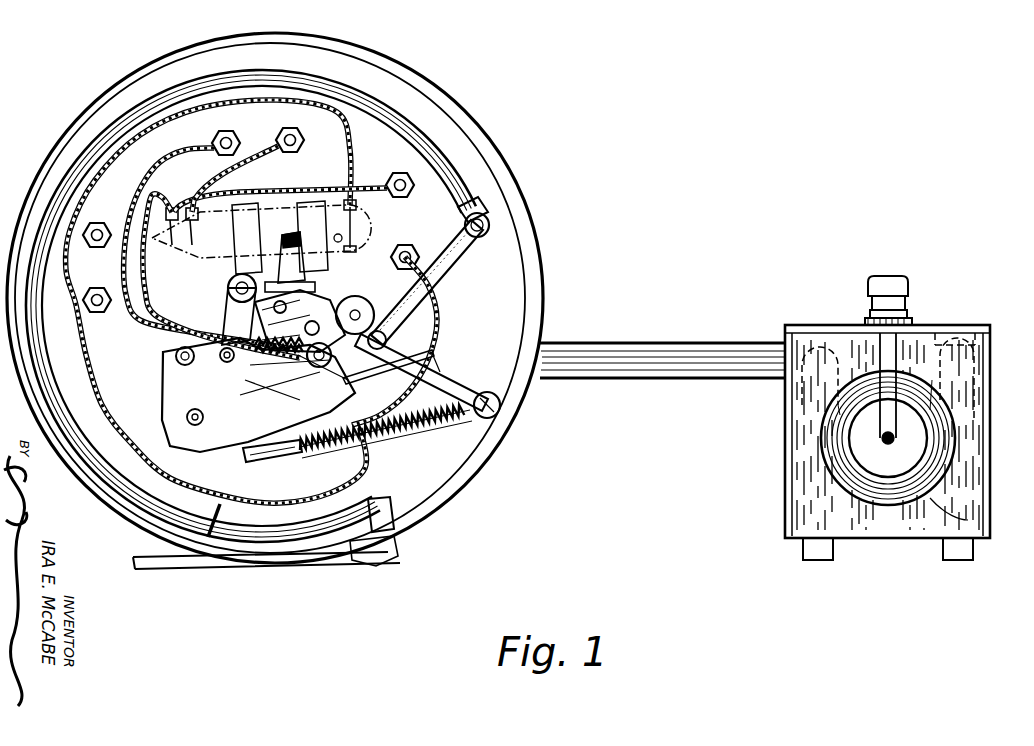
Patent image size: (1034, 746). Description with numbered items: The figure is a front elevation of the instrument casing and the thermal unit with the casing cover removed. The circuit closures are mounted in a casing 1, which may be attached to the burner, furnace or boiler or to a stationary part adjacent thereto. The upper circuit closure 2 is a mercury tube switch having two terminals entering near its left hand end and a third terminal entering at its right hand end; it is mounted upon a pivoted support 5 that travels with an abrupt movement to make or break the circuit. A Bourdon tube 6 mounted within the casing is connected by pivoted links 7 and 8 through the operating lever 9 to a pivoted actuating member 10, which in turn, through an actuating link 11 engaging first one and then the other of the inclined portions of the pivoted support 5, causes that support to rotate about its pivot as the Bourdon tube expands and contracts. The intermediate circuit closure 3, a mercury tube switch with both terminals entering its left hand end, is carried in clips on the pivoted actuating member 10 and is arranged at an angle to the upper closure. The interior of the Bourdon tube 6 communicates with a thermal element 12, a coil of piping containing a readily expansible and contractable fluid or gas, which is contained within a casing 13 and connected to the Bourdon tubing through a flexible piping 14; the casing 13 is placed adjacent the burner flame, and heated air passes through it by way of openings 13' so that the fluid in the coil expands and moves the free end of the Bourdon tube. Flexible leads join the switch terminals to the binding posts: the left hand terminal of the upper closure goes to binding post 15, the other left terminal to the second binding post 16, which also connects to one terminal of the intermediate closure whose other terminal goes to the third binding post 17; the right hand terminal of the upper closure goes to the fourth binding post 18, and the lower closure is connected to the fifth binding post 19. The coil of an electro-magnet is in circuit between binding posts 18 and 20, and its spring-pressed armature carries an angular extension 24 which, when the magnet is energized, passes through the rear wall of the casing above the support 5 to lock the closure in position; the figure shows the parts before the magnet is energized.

The casing 1 is at (26, 212).
The upper circuit closure 2 is at (376, 226).
The intermediate circuit closure 3 is at (418, 364).
The pivoted support 5 is at (318, 310).
The Bourdon tube 6 is at (353, 88).
The pivoted link 7 is at (447, 270).
The pivoted link 8 is at (425, 428).
The operating lever 9 is at (437, 393).
The pivoted actuating member 10 is at (250, 442).
The actuating link 11 is at (232, 307).
The thermal element 12 is at (842, 462).
The casing 13 is at (903, 418).
The openings 13' is at (976, 514).
The flexible piping 14 is at (672, 380).
The binding post 15 is at (396, 173).
The second binding post 16 is at (283, 132).
The third binding post 17 is at (212, 141).
The fourth binding post 18 is at (103, 306).
The fifth binding post 19 is at (414, 252).
The binding post 20 is at (101, 222).
The angular extension 24 is at (262, 258).